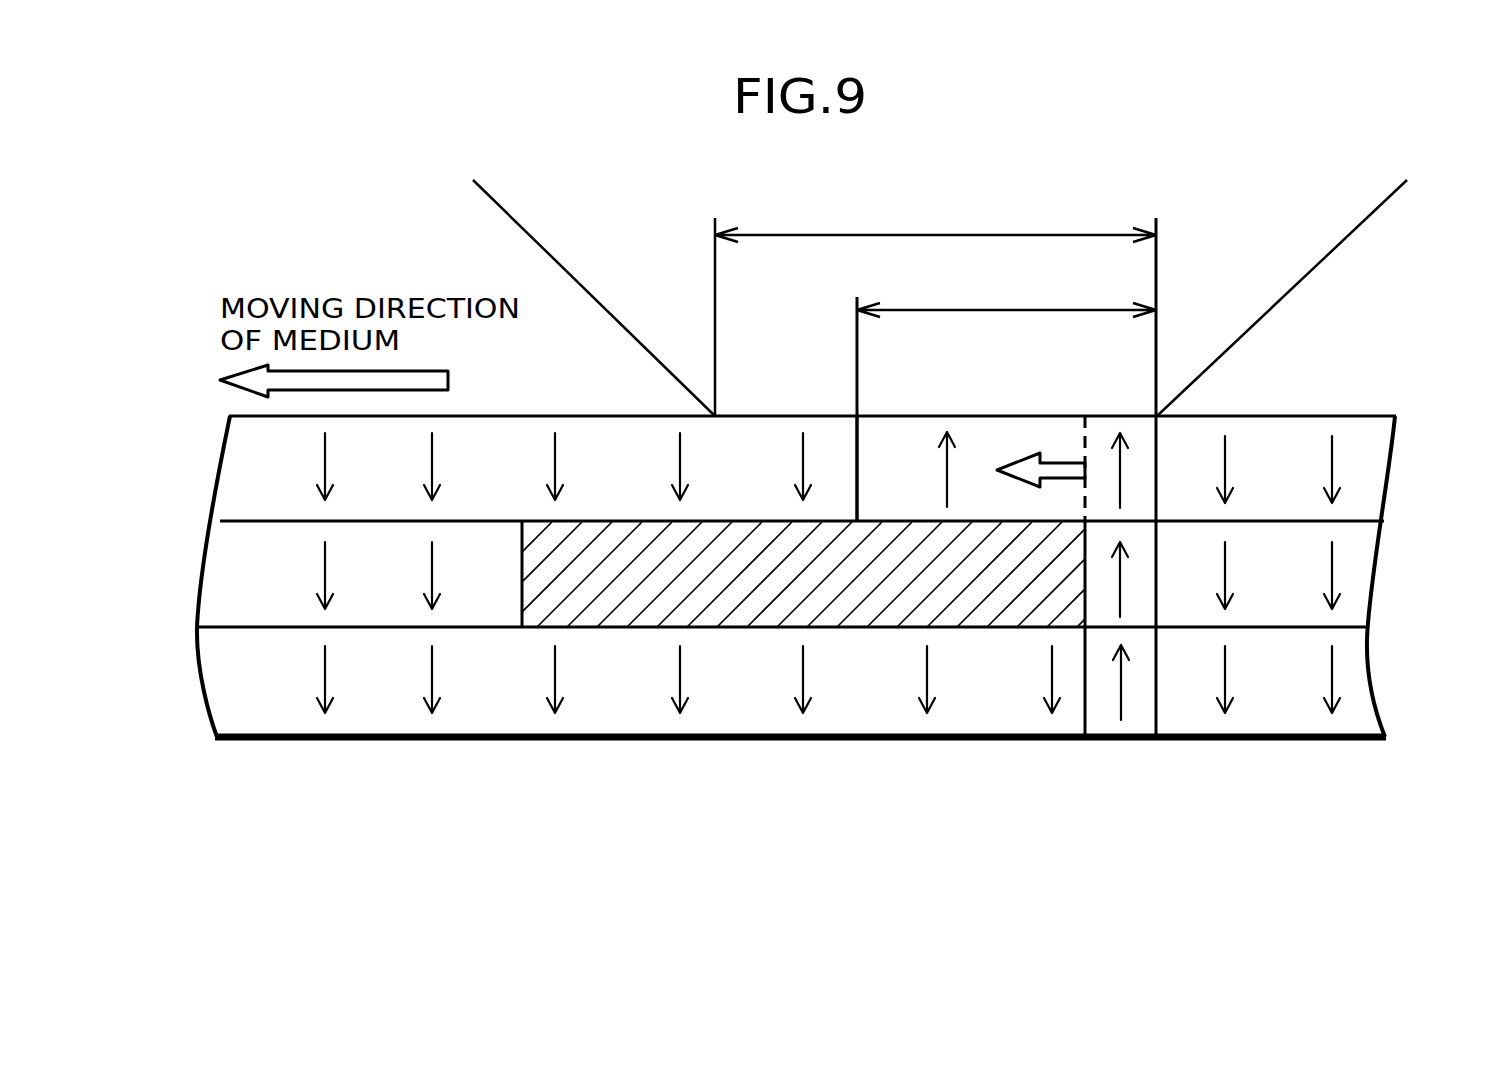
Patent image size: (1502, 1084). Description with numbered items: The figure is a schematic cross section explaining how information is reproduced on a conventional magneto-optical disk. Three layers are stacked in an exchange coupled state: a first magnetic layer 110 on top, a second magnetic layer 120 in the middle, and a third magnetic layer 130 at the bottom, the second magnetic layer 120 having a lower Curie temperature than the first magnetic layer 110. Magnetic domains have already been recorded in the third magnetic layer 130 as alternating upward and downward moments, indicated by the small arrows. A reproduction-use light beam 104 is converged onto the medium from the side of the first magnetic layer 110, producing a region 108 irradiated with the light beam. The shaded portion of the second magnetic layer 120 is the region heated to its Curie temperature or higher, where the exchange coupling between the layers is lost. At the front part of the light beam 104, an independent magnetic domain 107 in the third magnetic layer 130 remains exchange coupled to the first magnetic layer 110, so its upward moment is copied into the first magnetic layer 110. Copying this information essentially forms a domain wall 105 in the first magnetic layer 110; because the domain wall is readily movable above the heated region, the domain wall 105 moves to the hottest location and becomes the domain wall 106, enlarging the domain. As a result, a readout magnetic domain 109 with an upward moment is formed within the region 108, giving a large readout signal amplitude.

The reproduction-use light beam 104 is at (1302, 282).
The domain wall 105 is at (1078, 432).
The domain wall 106 is at (848, 432).
The independent magnetic domain 107 is at (1127, 745).
The region irradiated with the light beam 108 is at (935, 464).
The readout magnetic domain 109 is at (1006, 392).
The first magnetic layer 110 is at (1385, 490).
The second magnetic layer 120 is at (1365, 575).
The third magnetic layer 130 is at (1362, 690).